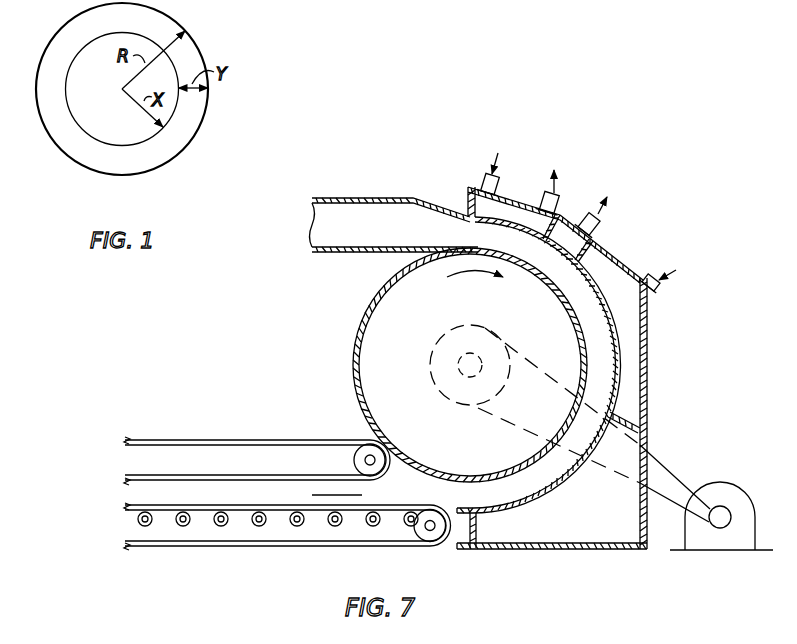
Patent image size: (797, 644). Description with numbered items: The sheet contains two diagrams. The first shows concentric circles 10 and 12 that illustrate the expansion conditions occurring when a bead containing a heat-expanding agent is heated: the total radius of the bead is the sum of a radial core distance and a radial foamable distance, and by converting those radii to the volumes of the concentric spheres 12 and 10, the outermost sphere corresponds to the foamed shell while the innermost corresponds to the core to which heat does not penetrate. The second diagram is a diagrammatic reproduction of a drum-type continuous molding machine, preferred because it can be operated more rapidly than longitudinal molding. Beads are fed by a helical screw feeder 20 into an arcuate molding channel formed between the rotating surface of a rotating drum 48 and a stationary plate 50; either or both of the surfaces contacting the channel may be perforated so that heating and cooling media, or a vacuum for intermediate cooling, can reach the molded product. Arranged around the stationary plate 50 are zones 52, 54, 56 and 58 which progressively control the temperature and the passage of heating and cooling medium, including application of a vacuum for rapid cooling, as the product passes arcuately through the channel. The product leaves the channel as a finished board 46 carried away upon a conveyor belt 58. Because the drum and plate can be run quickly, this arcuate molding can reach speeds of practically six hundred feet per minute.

In FIG. 1, the concentric circle 10 is at (71, 108).
In FIG. 1, the concentric circle 12 is at (49, 140).
In FIG. 7, the helical screw feeder 20 is at (355, 234).
In FIG. 7, the finished board 46 is at (430, 503).
In FIG. 7, the rotating drum 48 is at (483, 312).
In FIG. 7, the stationary plate 50 is at (582, 316).
In FIG. 7, the zone 52 is at (505, 207).
In FIG. 7, the zone 54 is at (588, 244).
In FIG. 7, the zone 56 is at (648, 358).
In FIG. 7, the conveyor belt 58 is at (214, 518).